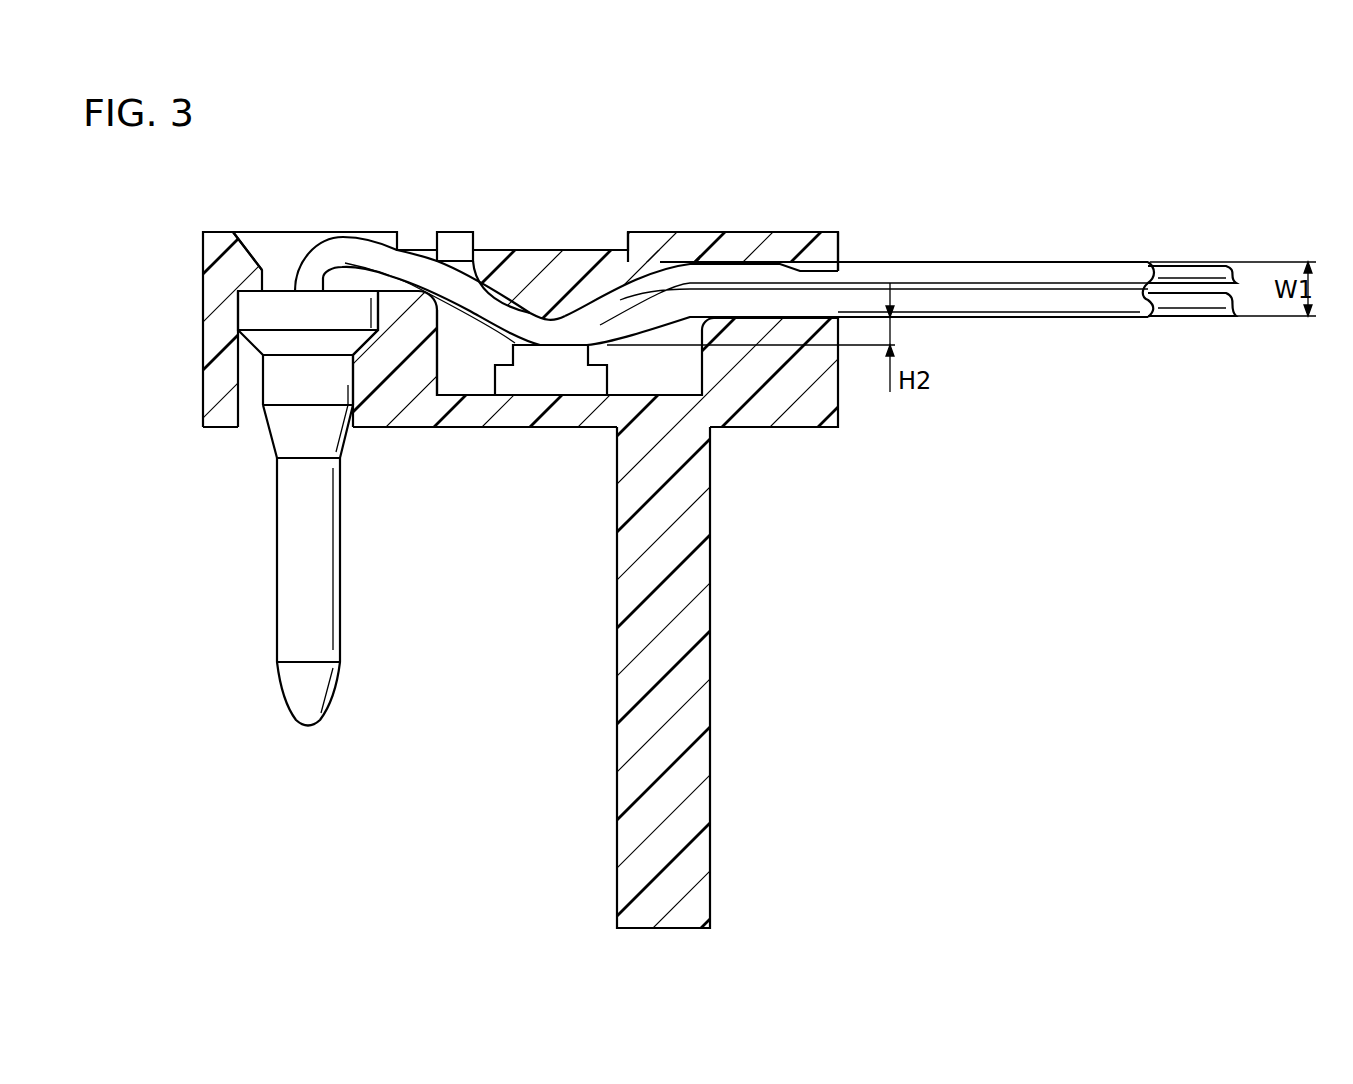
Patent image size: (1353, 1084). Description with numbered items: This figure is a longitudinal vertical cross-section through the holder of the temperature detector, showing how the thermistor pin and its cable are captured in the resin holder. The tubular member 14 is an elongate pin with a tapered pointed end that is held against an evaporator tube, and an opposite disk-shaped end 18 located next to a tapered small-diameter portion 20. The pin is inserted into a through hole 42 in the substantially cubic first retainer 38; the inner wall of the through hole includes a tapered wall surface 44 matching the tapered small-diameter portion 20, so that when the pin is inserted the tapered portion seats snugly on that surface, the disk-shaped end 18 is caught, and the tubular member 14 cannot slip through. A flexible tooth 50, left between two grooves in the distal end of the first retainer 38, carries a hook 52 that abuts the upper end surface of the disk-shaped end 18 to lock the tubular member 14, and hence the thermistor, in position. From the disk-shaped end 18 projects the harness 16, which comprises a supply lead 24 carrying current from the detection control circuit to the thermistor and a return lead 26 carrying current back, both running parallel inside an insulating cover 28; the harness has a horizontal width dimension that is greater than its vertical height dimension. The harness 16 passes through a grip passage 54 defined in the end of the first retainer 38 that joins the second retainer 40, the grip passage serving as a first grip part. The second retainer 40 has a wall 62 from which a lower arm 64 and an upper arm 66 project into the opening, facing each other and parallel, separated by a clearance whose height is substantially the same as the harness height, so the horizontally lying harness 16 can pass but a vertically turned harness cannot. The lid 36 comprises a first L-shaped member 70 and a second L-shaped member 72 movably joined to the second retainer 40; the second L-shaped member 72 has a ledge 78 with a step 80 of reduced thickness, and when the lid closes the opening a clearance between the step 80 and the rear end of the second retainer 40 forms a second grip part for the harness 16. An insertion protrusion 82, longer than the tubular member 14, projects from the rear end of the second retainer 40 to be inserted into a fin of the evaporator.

The tubular member 14 is at (290, 568).
The harness 16 is at (1236, 200).
The disk-shaped end 18 is at (298, 318).
The tapered small-diameter portion 20 is at (317, 347).
The supply lead 24 is at (1215, 277).
The return lead 26 is at (1173, 305).
The insulating cover 28 is at (1113, 272).
The lid 36 is at (706, 240).
The first retainer 38 is at (210, 418).
The second retainer 40 is at (815, 410).
The through hole 42 is at (278, 446).
The tapered wall surface 44 is at (338, 288).
The flexible tooth 50 is at (252, 235).
The hook 52 is at (260, 300).
The grip passage 54 is at (390, 248).
The wall 62 is at (467, 377).
The lower arm 64 is at (568, 357).
The upper arm 66 is at (540, 262).
The first L-shaped member 70 is at (462, 258).
The second L-shaped member 72 is at (645, 240).
The ledge 78 is at (807, 233).
The step 80 is at (838, 282).
The insertion protrusion 82 is at (700, 624).